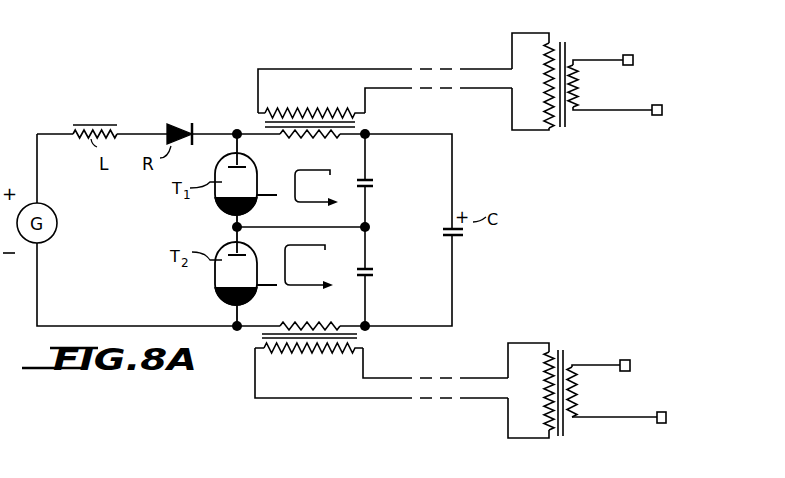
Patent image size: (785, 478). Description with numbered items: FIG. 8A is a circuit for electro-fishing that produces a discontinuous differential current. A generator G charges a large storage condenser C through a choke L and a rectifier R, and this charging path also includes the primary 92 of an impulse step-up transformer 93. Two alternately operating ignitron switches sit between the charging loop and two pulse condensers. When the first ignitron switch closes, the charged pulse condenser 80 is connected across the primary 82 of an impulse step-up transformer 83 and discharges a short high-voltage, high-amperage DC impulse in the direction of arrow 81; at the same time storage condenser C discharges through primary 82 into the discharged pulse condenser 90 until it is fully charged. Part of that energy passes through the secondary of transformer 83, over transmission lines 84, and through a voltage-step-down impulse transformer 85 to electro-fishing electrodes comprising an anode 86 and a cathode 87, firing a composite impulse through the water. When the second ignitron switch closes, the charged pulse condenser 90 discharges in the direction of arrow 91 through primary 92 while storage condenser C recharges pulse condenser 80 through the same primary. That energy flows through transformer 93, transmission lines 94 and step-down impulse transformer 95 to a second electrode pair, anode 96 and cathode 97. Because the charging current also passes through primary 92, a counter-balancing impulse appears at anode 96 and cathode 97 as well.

The pulse condenser 80 is at (376, 183).
The arrow 81 is at (297, 183).
The primary 82 is at (305, 141).
The impulse step-up transformer 83 is at (355, 123).
The transmission lines 84 is at (430, 64).
The voltage-step-down impulse transformer 85 is at (553, 45).
The anode 86 is at (633, 53).
The cathode 87 is at (664, 108).
The pulse condenser 90 is at (376, 272).
The arrow 91 is at (288, 265).
The primary 92 is at (314, 323).
The impulse step-up transformer 93 is at (357, 338).
The transmission lines 94 is at (426, 406).
The step-down impulse transformer 95 is at (552, 430).
The anode 96 is at (631, 364).
The cathode 97 is at (667, 418).